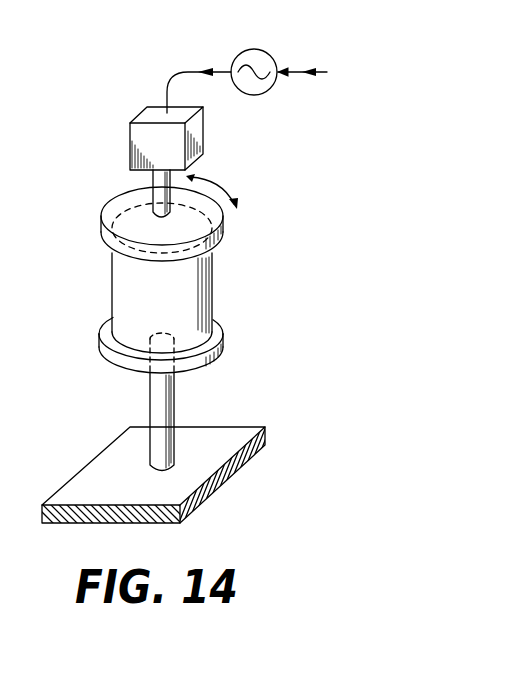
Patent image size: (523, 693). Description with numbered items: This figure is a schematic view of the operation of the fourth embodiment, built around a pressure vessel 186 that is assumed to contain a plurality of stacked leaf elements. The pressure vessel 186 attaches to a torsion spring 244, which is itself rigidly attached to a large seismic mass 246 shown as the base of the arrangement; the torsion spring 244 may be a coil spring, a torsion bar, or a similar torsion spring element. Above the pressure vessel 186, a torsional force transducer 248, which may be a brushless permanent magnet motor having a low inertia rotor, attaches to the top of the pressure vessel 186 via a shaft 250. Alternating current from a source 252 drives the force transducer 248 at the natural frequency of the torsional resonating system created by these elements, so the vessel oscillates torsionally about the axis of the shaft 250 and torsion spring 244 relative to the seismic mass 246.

The pressure vessel 186 is at (230, 278).
The torsion spring 244 is at (176, 405).
The seismic mass 246 is at (103, 462).
The torsional force transducer 248 is at (130, 137).
The shaft 250 is at (153, 188).
The source 252 is at (263, 50).